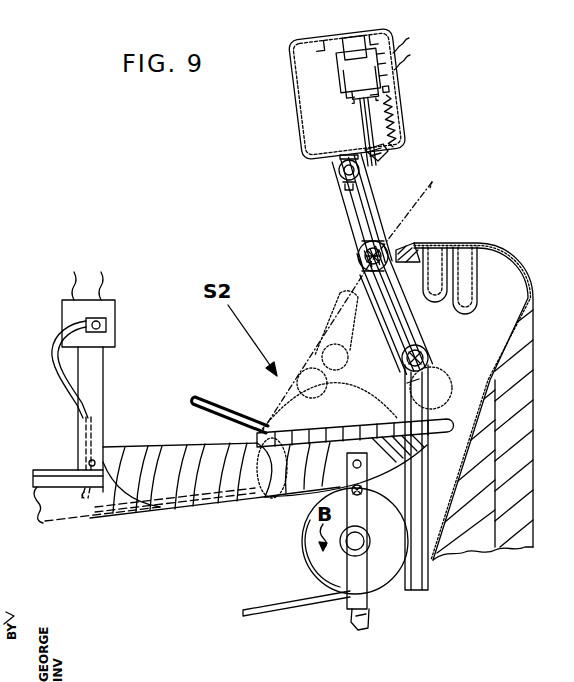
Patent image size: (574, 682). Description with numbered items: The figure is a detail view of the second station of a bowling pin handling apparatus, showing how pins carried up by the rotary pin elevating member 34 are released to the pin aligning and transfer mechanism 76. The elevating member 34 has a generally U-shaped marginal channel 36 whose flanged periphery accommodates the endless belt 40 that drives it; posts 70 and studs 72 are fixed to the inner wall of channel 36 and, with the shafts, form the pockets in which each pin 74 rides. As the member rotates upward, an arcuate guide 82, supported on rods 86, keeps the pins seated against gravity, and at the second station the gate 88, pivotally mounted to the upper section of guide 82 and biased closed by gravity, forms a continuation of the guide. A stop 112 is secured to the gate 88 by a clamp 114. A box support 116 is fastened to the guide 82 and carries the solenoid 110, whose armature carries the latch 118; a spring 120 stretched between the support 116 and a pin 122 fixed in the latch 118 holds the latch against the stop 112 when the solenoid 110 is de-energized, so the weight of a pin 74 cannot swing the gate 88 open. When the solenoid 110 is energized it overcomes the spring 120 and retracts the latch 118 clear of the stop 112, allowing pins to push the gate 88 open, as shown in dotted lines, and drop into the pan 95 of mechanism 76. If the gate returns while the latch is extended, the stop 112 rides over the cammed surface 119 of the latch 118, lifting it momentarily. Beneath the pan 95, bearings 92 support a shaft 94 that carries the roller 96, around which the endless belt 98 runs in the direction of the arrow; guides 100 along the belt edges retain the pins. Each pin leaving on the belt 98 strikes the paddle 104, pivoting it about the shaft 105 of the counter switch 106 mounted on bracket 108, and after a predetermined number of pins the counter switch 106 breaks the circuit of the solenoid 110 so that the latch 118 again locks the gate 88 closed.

The box support 116 is at (293, 76).
The solenoid 110 is at (340, 66).
The pin 122 is at (386, 99).
The spring 120 is at (390, 118).
The latch 118 is at (357, 124).
The cammed surface 119 is at (378, 156).
The guide 82 is at (339, 172).
The stop 112 is at (429, 184).
The clamp 114 is at (358, 258).
The gate 88 is at (325, 327).
The pin 74 is at (431, 373).
The endless belt 40 is at (404, 250).
The pin elevating member 34 is at (486, 238).
The channel 36 is at (506, 264).
The post 70 is at (436, 300).
The stud 72 is at (474, 305).
The guide 100 is at (122, 458).
The pin aligning and transfer mechanism 76 is at (302, 488).
The pan 95 is at (430, 440).
The roller 96 is at (318, 560).
The bearing 92 is at (345, 555).
The shaft 94 is at (365, 541).
The rod 86 is at (370, 622).
The endless belt 98 is at (252, 614).
The counter switch 106 is at (108, 312).
The shaft 105 is at (108, 325).
The bracket 108 is at (98, 358).
The paddle 104 is at (60, 380).